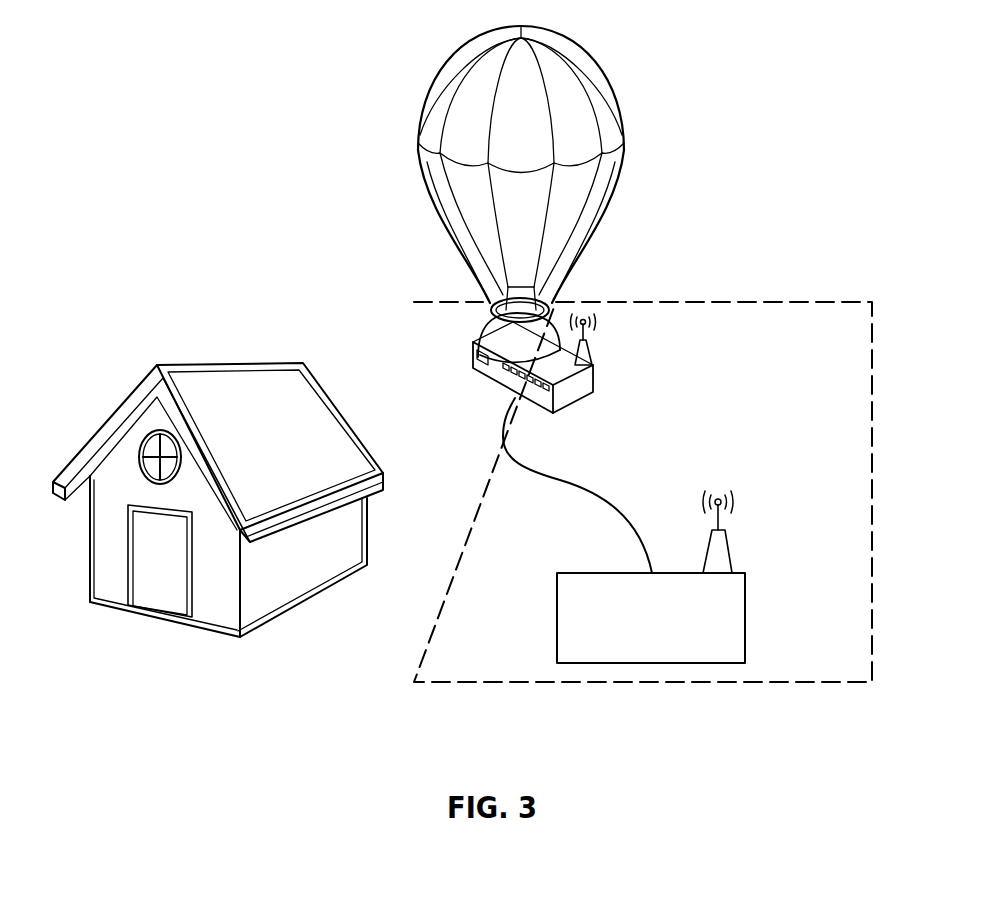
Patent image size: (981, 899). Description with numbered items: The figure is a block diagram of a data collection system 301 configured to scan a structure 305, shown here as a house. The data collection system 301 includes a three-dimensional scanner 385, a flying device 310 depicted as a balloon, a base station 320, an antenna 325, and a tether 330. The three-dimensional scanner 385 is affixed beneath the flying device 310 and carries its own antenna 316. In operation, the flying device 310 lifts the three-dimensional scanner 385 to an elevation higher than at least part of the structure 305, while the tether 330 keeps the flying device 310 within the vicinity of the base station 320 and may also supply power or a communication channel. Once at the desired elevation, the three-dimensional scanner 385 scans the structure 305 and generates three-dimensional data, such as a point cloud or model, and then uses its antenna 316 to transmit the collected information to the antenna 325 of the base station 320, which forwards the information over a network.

The data collection system 301 is at (787, 302).
The structure 305 is at (232, 363).
The flying device 310 is at (620, 95).
The antenna 316 is at (592, 347).
The base station 320 is at (746, 610).
The antenna 325 is at (738, 552).
The tether 330 is at (565, 478).
The 3D scanner 385 is at (578, 383).